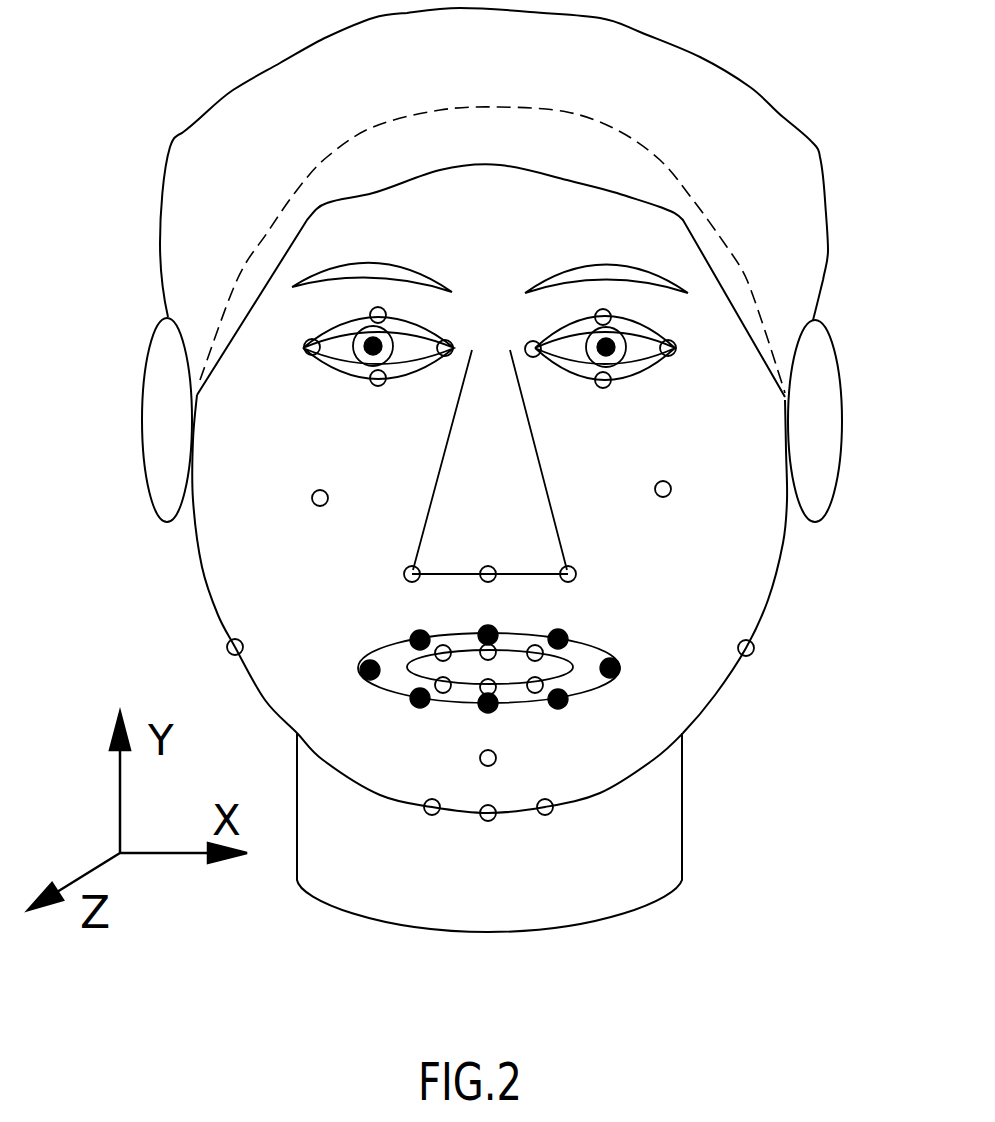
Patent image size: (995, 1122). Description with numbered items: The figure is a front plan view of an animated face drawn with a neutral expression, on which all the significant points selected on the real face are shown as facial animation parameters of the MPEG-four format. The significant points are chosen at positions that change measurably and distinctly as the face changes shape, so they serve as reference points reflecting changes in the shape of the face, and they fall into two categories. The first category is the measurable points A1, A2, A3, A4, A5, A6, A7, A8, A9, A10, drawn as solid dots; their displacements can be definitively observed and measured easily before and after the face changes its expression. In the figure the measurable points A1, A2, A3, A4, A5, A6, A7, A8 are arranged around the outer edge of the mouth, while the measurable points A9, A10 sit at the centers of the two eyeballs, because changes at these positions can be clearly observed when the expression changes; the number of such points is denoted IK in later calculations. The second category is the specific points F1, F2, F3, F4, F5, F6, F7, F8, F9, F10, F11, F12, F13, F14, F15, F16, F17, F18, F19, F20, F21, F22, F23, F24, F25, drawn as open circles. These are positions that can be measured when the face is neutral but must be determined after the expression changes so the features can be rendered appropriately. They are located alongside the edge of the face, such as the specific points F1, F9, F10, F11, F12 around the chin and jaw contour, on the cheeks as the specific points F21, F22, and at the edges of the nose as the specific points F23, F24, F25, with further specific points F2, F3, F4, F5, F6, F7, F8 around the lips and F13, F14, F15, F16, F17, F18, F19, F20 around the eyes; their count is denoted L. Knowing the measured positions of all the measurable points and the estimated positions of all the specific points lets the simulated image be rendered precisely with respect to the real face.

The specific point F1 is at (486, 832).
The specific point F2 is at (484, 646).
The specific point F3 is at (498, 693).
The specific point F4 is at (535, 645).
The specific point F5 is at (437, 658).
The specific point F6 is at (542, 683).
The specific point F7 is at (443, 693).
The specific point F8 is at (491, 775).
The specific point F9 is at (558, 821).
The specific point F10 is at (417, 819).
The specific point F11 is at (770, 660).
The specific point F12 is at (213, 654).
The specific point F13 is at (608, 301).
The specific point F14 is at (383, 299).
The specific point F15 is at (610, 401).
The specific point F16 is at (377, 395).
The specific point F17 is at (691, 346).
The specific point F18 is at (455, 329).
The specific point F19 is at (527, 330).
The specific point F20 is at (292, 354).
The specific point F21 is at (690, 489).
The specific point F22 is at (296, 494).
The specific point F23 is at (592, 571).
The specific point F24 is at (390, 569).
The specific point F25 is at (495, 558).
The measurable point A1 is at (495, 621).
The measurable point A2 is at (490, 718).
The measurable point A3 is at (627, 660).
The measurable point A4 is at (354, 661).
The measurable point A5 is at (573, 630).
The measurable point A6 is at (404, 631).
The measurable point A7 is at (572, 709).
The measurable point A8 is at (412, 709).
The measurable point A9 is at (615, 340).
The measurable point A10 is at (363, 340).